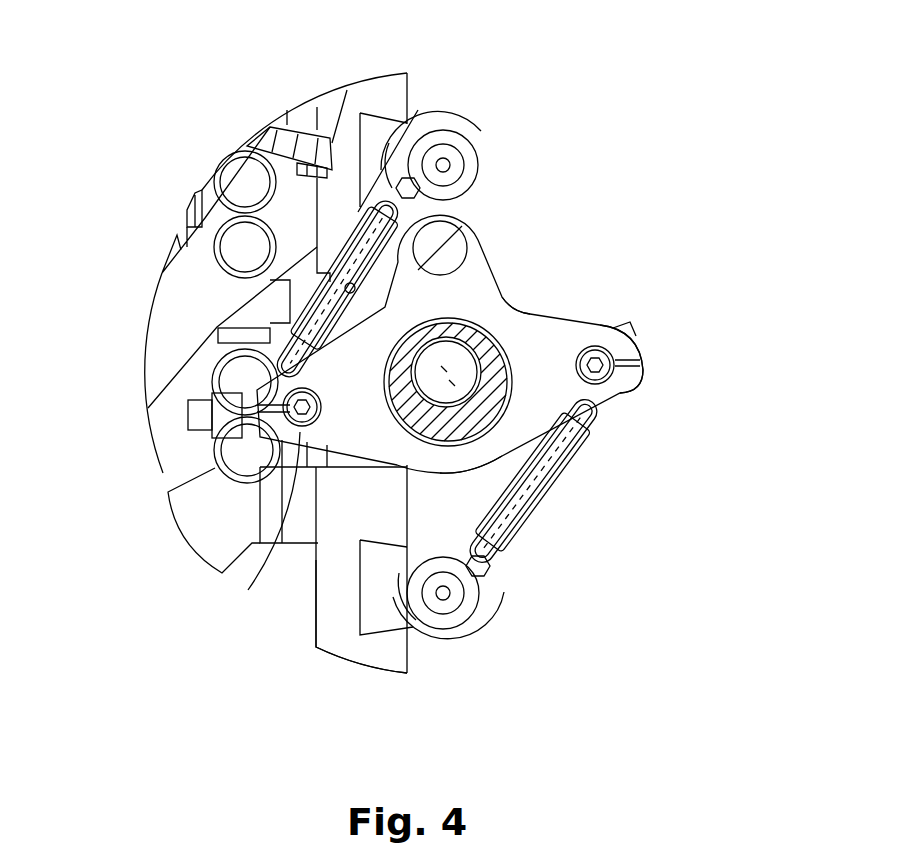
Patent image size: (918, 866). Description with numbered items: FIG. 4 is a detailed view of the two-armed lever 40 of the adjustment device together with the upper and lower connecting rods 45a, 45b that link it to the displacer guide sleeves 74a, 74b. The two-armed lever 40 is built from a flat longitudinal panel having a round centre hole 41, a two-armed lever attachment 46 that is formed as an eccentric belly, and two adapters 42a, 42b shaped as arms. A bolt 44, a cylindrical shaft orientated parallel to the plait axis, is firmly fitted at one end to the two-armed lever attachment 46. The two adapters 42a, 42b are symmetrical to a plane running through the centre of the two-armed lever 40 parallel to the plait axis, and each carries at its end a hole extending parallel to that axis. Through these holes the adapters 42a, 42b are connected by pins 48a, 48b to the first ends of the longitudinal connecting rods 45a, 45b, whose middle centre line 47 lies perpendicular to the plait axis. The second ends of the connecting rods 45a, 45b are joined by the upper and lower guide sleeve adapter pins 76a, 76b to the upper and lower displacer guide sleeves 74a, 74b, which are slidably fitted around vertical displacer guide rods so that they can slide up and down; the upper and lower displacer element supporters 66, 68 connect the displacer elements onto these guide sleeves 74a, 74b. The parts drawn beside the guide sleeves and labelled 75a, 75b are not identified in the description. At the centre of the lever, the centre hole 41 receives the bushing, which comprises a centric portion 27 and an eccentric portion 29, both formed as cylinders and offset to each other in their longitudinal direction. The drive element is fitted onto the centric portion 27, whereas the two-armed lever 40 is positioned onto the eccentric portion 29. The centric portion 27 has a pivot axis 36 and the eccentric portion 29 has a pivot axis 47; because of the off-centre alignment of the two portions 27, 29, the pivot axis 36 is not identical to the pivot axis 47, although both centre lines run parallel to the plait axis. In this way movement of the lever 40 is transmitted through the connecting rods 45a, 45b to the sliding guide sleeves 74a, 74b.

The centric portion 27 is at (460, 427).
The eccentric portion 29 is at (475, 470).
The pivot axis 36 is at (473, 320).
The two-armed lever 40 is at (701, 260).
The round centre hole 41 is at (560, 327).
The adapter 42a is at (257, 524).
The adapter 42b is at (618, 383).
The bolt 44 is at (450, 240).
The longitudinal connecting rod 45a is at (365, 195).
The longitudinal connecting rod 45b is at (597, 433).
The two-armed lever attachment 46 is at (475, 273).
The pivot axis 47 is at (447, 387).
The pin 48a is at (293, 410).
The pin 48b is at (620, 362).
The upper displacer element supporter 66 is at (145, 362).
The lower displacer element supporter 68 is at (190, 510).
The upper displacer guide sleeve 74a is at (350, 95).
The lower displacer guide sleeve 74b is at (323, 625).
The guide plate 75a is at (375, 130).
The guide plate 75b is at (380, 622).
The upper guide sleeve adapter pin 76a is at (453, 160).
The lower guide sleeve adapter pin 76b is at (447, 600).